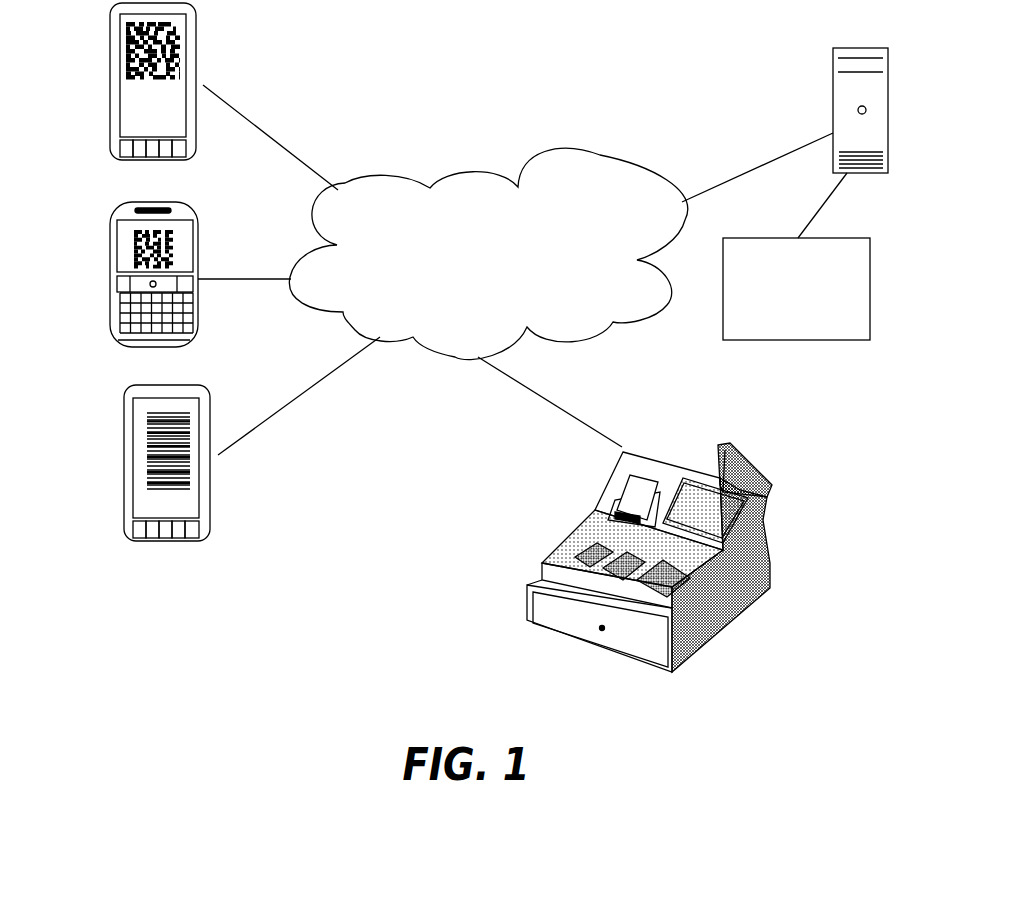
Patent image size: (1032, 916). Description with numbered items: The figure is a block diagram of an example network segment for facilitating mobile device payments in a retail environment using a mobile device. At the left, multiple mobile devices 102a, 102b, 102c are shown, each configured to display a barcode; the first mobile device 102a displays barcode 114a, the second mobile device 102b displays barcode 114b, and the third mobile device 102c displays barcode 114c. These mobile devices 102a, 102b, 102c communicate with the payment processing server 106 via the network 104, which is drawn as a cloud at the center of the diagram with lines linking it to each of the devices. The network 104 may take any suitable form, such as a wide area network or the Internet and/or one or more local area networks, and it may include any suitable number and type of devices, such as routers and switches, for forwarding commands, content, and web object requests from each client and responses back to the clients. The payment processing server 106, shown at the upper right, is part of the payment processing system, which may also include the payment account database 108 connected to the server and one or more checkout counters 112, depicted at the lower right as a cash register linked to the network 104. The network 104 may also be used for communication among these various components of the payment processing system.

The mobile device 102a is at (160, 81).
The mobile device 102b is at (155, 274).
The mobile device 102c is at (172, 463).
The barcode 114a is at (177, 41).
The barcode 114b is at (172, 247).
The barcode 114c is at (190, 487).
The network 104 is at (489, 288).
The payment processing server 106 is at (833, 100).
The payment account database 108 is at (784, 332).
The checkout counter 112 is at (568, 535).